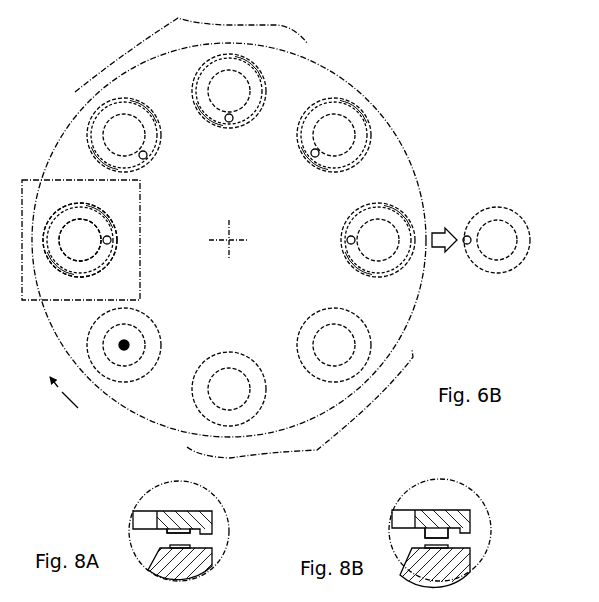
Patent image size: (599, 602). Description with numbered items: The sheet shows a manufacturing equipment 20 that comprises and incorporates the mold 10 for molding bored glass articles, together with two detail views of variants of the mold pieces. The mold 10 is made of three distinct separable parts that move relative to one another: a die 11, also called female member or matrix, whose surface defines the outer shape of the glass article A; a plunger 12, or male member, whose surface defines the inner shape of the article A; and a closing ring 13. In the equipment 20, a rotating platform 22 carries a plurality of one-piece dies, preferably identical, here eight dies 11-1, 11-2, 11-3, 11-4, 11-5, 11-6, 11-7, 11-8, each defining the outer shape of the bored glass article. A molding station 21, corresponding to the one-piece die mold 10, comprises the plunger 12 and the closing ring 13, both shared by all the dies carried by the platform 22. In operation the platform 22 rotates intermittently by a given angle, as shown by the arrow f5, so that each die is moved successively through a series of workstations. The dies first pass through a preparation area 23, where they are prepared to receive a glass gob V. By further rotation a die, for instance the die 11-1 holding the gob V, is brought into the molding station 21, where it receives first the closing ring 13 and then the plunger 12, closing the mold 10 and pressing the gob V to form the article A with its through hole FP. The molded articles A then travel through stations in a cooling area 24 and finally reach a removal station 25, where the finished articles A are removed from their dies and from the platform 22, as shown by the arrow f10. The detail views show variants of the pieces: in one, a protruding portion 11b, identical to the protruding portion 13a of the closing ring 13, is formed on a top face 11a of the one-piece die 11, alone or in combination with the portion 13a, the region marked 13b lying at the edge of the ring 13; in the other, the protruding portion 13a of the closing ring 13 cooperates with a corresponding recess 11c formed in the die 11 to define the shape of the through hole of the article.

In FIG. 6B, the mold 10 is at (56, 208).
In FIG. 8A, the mold 10 is at (130, 487).
In FIG. 8B, the mold 10 is at (480, 494).
In FIG. 8A, the die 11 is at (213, 555).
In FIG. 8B, the die 11 is at (470, 553).
In FIG. 8A, the top face 11a is at (160, 548).
In FIG. 8A, the protruding portion 11b is at (171, 545).
In FIG. 8B, the recess 11c is at (412, 548).
In FIG. 6B, the one-piece die 11-1 is at (109, 219).
In FIG. 6B, the one-piece die 11-2 is at (97, 325).
In FIG. 6B, the one-piece die 11-3 is at (208, 358).
In FIG. 6B, the one-piece die 11-4 is at (303, 332).
In FIG. 6B, the one-piece die 11-5 is at (387, 277).
In FIG. 6B, the one-piece die 11-6 is at (368, 160).
In FIG. 6B, the one-piece die 11-7 is at (266, 88).
In FIG. 6B, the one-piece die 11-8 is at (145, 106).
In FIG. 6B, the plunger 12 is at (94, 252).
In FIG. 6B, the closing ring 13 is at (94, 268).
In FIG. 8A, the closing ring 13 is at (181, 510).
In FIG. 8B, the closing ring 13 is at (438, 510).
In FIG. 8A, the protruding portion 13a is at (192, 532).
In FIG. 8B, the protruding portion 13a is at (450, 536).
In FIG. 8A, the ring member step 13b is at (213, 530).
In FIG. 6B, the manufacturing equipment 20 is at (404, 79).
In FIG. 6B, the molding station 21 is at (68, 178).
In FIG. 6B, the rotating platform 22 is at (398, 143).
In FIG. 6B, the preparation area 23 is at (300, 409).
In FIG. 6B, the cooling area 24 is at (191, 46).
In FIG. 6B, the removal station 25 is at (448, 191).
In FIG. 6B, the arrow f10 is at (438, 231).
In FIG. 6B, the arrow f5 is at (58, 393).
In FIG. 6B, the glass article A is at (93, 206).
In FIG. 6B, the through hole FP is at (145, 160).
In FIG. 6B, the glass gob V is at (130, 344).